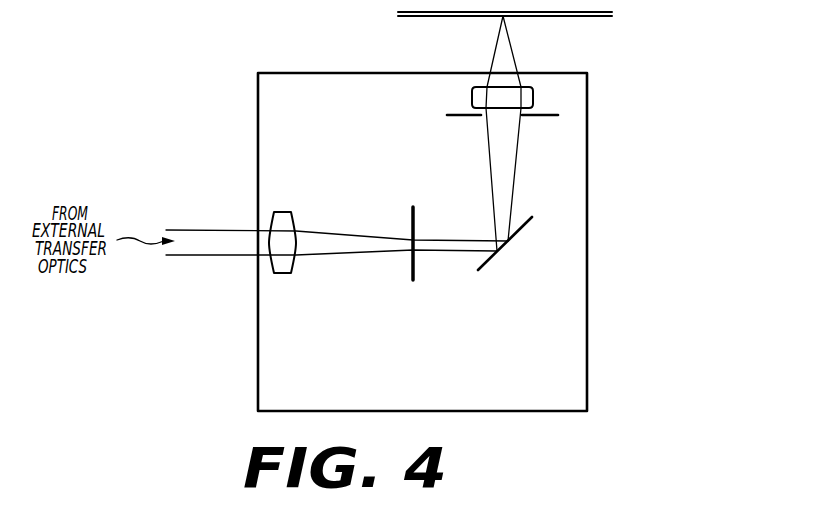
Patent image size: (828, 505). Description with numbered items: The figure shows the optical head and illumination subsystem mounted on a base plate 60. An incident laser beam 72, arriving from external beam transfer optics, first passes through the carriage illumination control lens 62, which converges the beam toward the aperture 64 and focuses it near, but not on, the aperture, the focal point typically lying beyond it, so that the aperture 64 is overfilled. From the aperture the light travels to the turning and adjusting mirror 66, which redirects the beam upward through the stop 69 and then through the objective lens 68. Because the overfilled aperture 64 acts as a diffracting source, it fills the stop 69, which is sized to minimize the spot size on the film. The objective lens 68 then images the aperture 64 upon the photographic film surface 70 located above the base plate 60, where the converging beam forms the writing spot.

The base plate 60 is at (588, 363).
The carriage illumination control lens 62 is at (278, 212).
The aperture 64 is at (417, 268).
The turning and adjusting mirror 66 is at (486, 265).
The objective lens 68 is at (472, 96).
The stop 69 is at (530, 117).
The photographic film surface 70 is at (565, 17).
The incident laser beam 72 is at (238, 256).